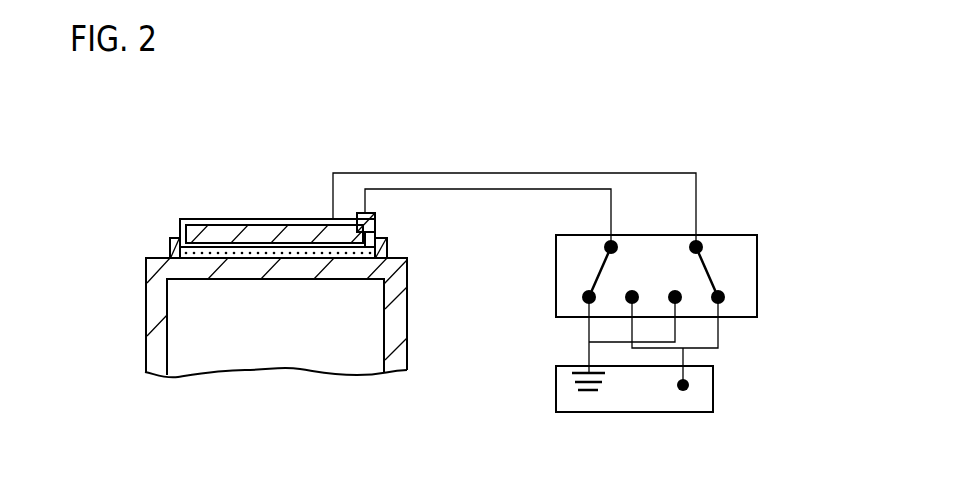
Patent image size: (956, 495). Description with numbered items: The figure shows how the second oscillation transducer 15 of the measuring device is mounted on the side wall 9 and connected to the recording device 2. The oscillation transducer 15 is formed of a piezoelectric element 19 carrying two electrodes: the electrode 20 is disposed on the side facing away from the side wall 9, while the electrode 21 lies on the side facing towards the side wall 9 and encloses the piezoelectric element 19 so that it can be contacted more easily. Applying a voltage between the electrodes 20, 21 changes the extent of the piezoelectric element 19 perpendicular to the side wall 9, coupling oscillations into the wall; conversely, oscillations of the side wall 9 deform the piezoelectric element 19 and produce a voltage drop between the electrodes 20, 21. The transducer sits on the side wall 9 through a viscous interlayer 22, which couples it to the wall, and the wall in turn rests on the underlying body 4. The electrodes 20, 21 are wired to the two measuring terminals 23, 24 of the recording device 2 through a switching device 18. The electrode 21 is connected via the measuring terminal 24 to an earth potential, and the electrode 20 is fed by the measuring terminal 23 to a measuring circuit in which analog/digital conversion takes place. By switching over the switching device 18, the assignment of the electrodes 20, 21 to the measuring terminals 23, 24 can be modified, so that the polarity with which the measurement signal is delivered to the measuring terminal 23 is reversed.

The recording device 2 is at (632, 407).
The substrate holder body 4 is at (203, 307).
The side wall 9 is at (347, 267).
The second oscillation transducer 15 is at (277, 184).
The switching device 18 is at (758, 295).
The piezoelectric element 19 is at (205, 235).
The electrode 20 is at (287, 219).
The electrode 21 is at (387, 246).
The viscous interlayer 22 is at (170, 253).
The measuring terminal 23 is at (688, 379).
The measuring terminal 24 is at (587, 366).